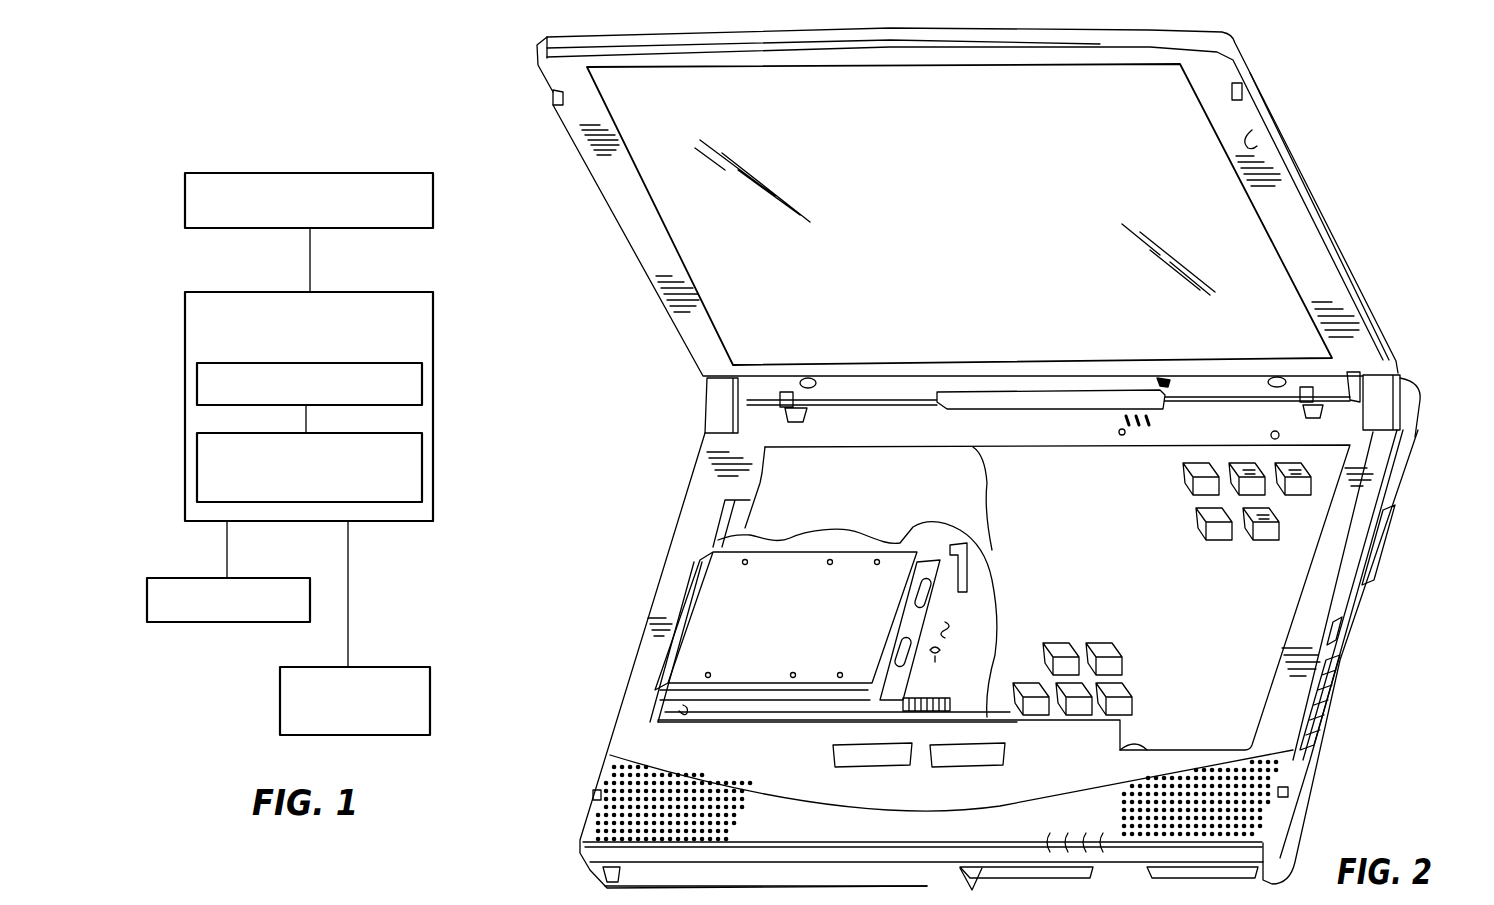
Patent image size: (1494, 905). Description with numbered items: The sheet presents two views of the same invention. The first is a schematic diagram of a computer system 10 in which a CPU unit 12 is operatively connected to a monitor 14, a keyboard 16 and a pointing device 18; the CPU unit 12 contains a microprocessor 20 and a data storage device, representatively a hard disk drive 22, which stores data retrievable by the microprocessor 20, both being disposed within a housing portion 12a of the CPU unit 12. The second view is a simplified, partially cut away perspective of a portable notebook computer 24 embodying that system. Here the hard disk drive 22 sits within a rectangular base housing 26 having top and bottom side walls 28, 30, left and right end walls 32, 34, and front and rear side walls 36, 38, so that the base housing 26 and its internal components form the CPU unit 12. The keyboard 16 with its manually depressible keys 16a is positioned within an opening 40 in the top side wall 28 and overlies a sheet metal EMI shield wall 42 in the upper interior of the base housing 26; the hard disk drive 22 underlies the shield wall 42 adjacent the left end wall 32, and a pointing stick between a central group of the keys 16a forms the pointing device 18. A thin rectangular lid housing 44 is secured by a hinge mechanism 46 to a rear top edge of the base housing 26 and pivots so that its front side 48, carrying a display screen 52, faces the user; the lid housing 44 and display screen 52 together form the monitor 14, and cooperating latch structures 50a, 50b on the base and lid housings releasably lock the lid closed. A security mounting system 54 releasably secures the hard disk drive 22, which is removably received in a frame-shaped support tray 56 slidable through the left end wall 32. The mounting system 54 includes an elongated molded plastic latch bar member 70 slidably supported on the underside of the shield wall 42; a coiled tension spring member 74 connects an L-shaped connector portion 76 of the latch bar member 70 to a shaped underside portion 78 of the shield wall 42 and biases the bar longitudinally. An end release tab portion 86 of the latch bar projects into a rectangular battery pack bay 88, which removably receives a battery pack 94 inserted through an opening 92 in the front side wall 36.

In FIG. 1, the computer system 10 is at (430, 268).
In FIG. 1, the CPU unit 12 is at (445, 329).
In FIG. 1, the housing portion 12a is at (433, 505).
In FIG. 1, the monitor 14 is at (322, 172).
In FIG. 1, the keyboard 16 is at (222, 623).
In FIG. 2, the keyboard 16 is at (1275, 602).
In FIG. 2, the keys 16a is at (1213, 523).
In FIG. 1, the pointing device 18 is at (430, 692).
In FIG. 1, the microprocessor 20 is at (423, 380).
In FIG. 1, the hard disk drive 22 is at (422, 462).
In FIG. 2, the hard disk drive 22 is at (800, 632).
In FIG. 2, the portable notebook computer 24 is at (1392, 115).
In FIG. 2, the base housing 26 is at (1355, 678).
In FIG. 2, the top side wall 28 is at (1350, 531).
In FIG. 2, the bottom side wall 30 is at (972, 890).
In FIG. 2, the left end wall 32 is at (590, 870).
In FIG. 2, the right end wall 34 is at (1330, 730).
In FIG. 2, the front side wall 36 is at (927, 867).
In FIG. 2, the rear side wall 38 is at (1420, 405).
In FIG. 2, the opening 40 is at (1145, 748).
In FIG. 2, the EMI shield wall 42 is at (876, 502).
In FIG. 2, the lid housing 44 is at (1330, 195).
In FIG. 2, the hinge mechanism 46 is at (705, 400).
In FIG. 2, the front side 48 is at (1252, 140).
In FIG. 2, the latch structure 50a is at (595, 795).
In FIG. 2, the latch structure 50b is at (552, 101).
In FIG. 2, the display screen 52 is at (965, 229).
In FIG. 2, the security mounting system 54 is at (968, 538).
In FIG. 2, the support tray 56 is at (771, 703).
In FIG. 2, the latch bar member 70 is at (913, 623).
In FIG. 2, the coiled tension spring member 74 is at (963, 627).
In FIG. 2, the connector portion 76 is at (962, 572).
In FIG. 2, the underside portion 78 is at (942, 655).
In FIG. 2, the end release tab portion 86 is at (880, 700).
In FIG. 2, the battery pack bay 88 is at (688, 708).
In FIG. 2, the opening 92 is at (607, 873).
In FIG. 2, the battery pack 94 is at (753, 870).